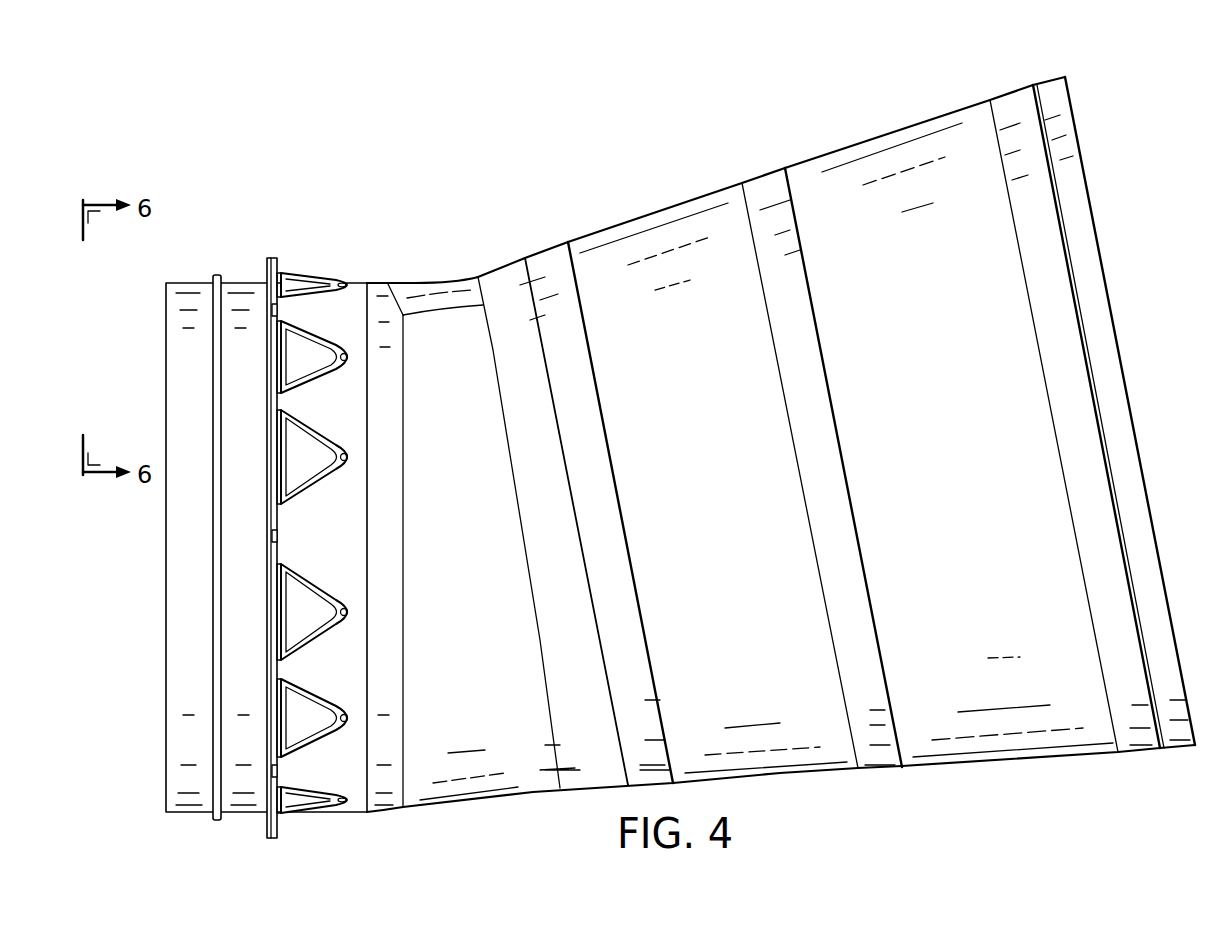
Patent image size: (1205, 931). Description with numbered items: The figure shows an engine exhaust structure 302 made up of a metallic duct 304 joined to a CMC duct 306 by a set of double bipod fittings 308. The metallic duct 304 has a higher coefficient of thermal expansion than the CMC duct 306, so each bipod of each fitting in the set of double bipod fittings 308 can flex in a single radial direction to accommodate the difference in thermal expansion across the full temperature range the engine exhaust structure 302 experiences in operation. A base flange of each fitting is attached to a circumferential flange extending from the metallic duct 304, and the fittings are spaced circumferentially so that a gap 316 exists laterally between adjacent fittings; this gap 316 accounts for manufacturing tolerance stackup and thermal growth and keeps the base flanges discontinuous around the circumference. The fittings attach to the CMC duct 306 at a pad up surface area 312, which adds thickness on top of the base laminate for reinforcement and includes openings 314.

The engine exhaust structure 302 is at (400, 110).
The metallic duct 304 is at (190, 283).
The CMC duct 306 is at (891, 134).
The set of double bipod fittings 308 is at (286, 232).
The pad up surface area 312 is at (290, 670).
The openings 314 is at (350, 483).
The gap 316 is at (277, 309).